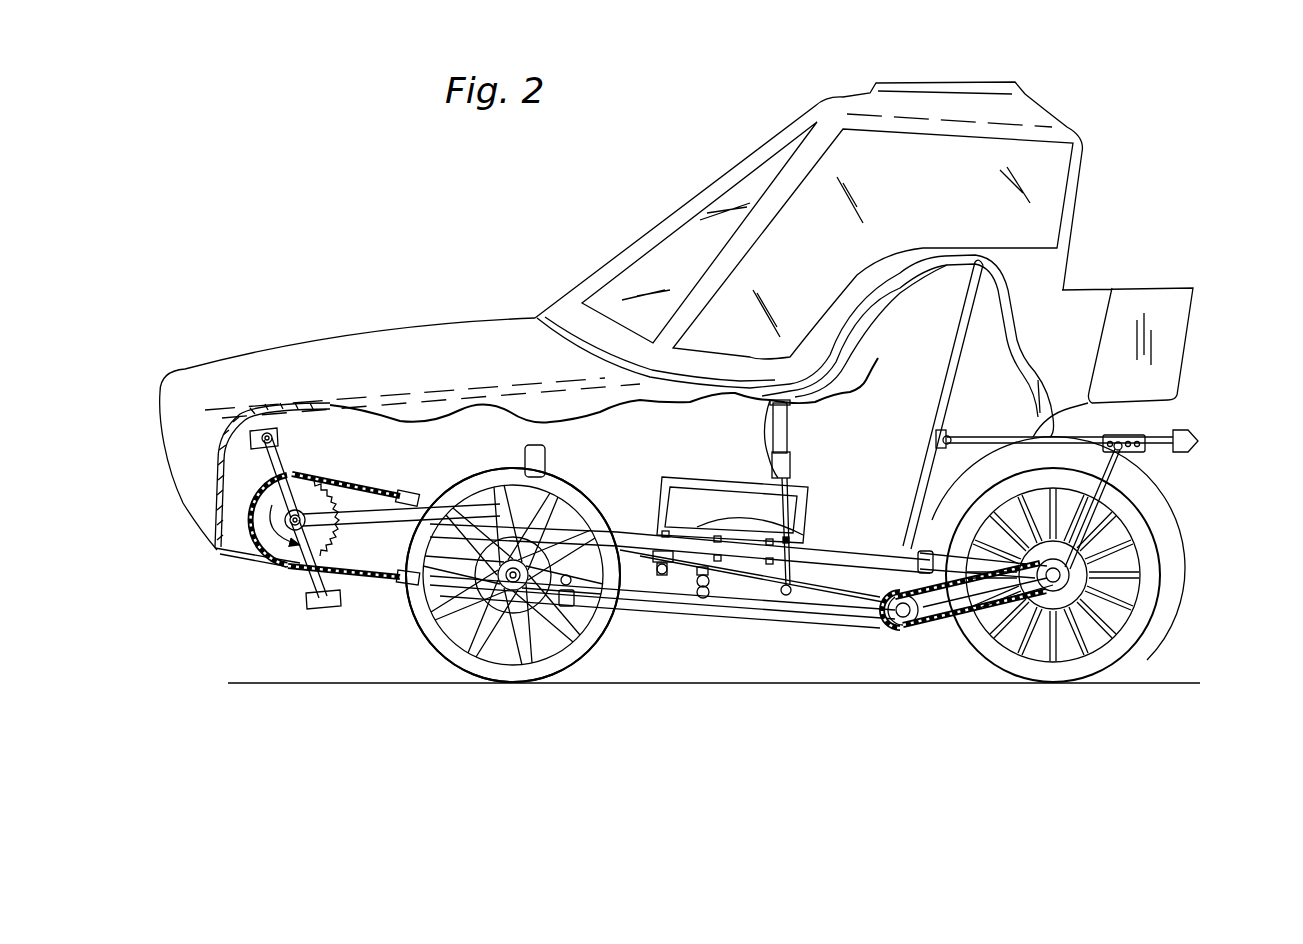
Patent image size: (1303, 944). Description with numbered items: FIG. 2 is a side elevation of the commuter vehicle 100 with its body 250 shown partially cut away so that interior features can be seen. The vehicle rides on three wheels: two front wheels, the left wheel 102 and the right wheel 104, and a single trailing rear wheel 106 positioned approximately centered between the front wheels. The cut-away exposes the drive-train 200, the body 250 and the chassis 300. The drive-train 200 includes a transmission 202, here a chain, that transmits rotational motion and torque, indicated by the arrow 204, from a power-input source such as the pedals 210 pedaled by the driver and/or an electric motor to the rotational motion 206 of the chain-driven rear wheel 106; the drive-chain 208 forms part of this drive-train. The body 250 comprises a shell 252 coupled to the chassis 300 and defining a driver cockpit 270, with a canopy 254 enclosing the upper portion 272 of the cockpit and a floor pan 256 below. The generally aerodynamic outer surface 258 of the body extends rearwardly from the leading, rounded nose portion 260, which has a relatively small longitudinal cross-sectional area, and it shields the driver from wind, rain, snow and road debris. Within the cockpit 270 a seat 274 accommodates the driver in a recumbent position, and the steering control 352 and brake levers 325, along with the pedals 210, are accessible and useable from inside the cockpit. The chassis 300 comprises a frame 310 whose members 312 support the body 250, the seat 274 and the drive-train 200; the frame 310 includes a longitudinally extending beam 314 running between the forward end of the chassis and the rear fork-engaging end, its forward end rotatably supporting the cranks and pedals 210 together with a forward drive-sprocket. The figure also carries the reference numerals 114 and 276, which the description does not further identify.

The commuter vehicle 100 is at (1152, 193).
The left front wheel 102 is at (420, 637).
The right front wheel 104 is at (513, 575).
The rear wheel 106 is at (1198, 585).
The drive sprocket and chain 114 is at (933, 623).
The drive-train 200 is at (225, 580).
The transmission 202 is at (317, 463).
The arrow indicating rotational motion and torque 204 is at (280, 550).
The rotational motion of the drive-wheel 206 is at (1178, 595).
The drive-chain 208 is at (377, 488).
The pedals 210 is at (268, 430).
The body 250 is at (367, 317).
The shell 252 is at (633, 380).
The canopy 254 is at (612, 257).
The floor pan 256 is at (214, 552).
The outer surface 258 is at (457, 347).
The nose portion 260 is at (160, 407).
The driver cockpit 270 is at (1142, 292).
The upper portion of the cockpit 272 is at (835, 276).
The seat 274 is at (970, 368).
The seat post 276 is at (955, 404).
The chassis 300 is at (672, 613).
The frame 310 is at (858, 557).
The frame members 312 is at (633, 527).
The longitudinally extending beam 314 is at (367, 523).
The brake levers 325 is at (757, 448).
The steering control 352 is at (783, 423).